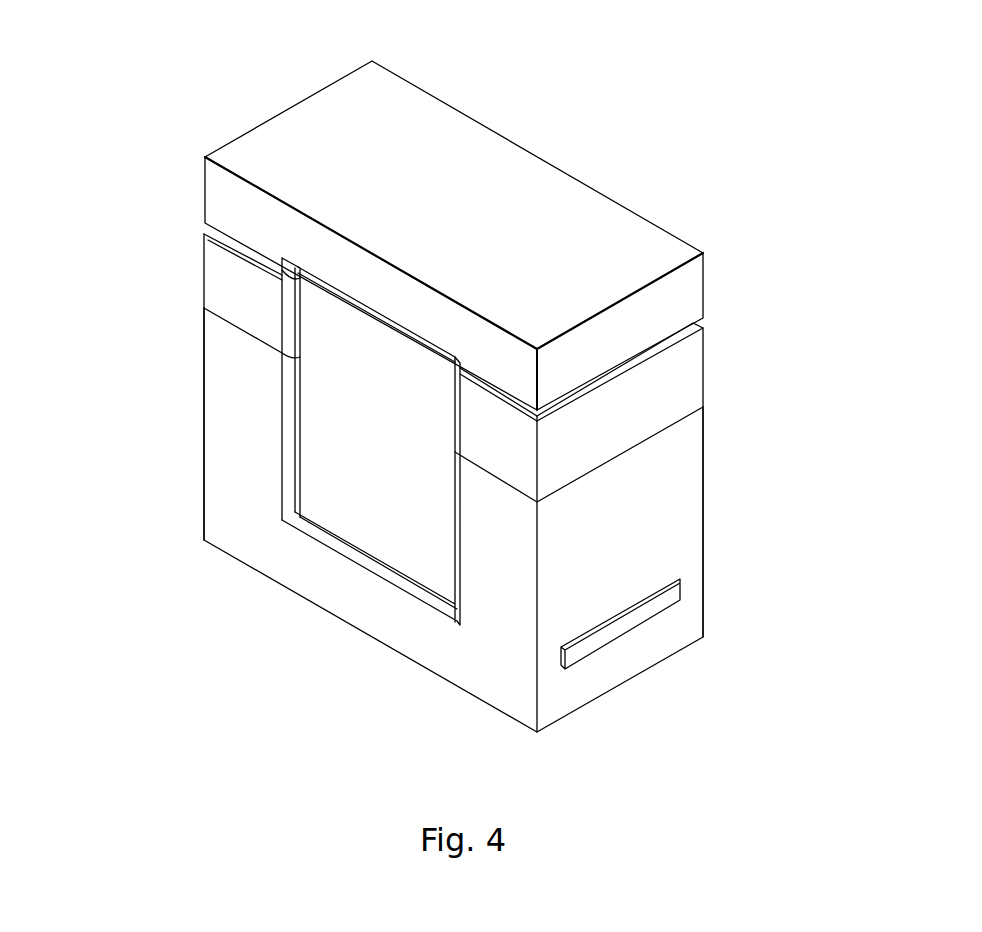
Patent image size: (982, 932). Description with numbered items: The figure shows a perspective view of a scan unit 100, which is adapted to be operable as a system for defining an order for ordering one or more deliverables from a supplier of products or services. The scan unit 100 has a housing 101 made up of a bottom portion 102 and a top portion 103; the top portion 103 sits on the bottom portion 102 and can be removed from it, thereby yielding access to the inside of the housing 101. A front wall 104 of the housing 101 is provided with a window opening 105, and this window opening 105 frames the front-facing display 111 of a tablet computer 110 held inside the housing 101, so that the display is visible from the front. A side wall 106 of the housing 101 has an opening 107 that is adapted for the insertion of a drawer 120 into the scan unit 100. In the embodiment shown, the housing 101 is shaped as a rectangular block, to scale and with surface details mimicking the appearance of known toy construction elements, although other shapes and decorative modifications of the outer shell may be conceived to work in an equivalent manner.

The scan unit 100 is at (106, 113).
The housing 101 is at (805, 645).
The bottom portion 102 is at (641, 418).
The top portion 103 is at (562, 215).
The front wall 104 is at (232, 359).
The window opening 105 is at (300, 390).
The side wall 106 is at (640, 502).
The opening 107 is at (683, 582).
The tablet computer 110 is at (343, 445).
The front-facing display 111 is at (343, 467).
The drawer 120 is at (637, 617).